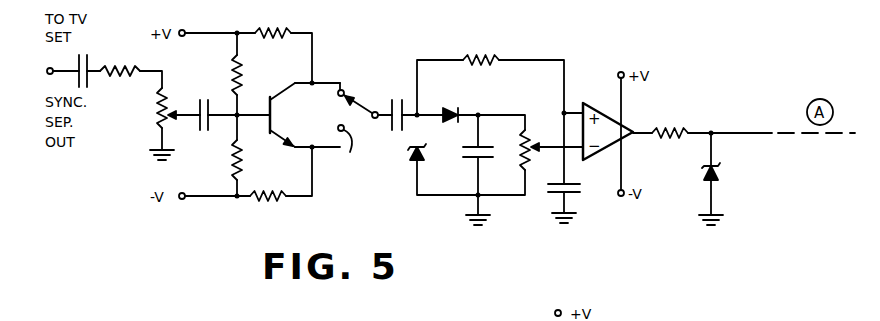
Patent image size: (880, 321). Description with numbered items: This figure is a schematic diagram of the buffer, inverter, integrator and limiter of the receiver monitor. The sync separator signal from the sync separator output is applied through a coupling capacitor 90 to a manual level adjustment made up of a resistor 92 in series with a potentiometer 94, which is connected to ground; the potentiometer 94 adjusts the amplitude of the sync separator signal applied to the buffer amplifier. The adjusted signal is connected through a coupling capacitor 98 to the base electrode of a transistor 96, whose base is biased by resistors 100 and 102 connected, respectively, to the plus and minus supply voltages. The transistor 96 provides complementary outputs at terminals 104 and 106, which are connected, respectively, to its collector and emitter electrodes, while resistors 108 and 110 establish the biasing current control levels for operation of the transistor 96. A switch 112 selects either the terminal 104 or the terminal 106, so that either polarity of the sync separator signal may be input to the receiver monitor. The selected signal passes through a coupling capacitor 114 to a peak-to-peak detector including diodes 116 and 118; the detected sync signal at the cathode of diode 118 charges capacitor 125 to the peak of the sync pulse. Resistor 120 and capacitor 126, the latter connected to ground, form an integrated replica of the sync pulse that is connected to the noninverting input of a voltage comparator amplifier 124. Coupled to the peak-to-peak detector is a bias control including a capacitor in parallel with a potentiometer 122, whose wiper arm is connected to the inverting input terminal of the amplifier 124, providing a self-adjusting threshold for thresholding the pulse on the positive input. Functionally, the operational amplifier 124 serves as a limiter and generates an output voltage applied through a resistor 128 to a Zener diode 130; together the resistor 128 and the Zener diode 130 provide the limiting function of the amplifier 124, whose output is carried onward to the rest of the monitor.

The coupling capacitor 90 is at (84, 52).
The resistor 92 is at (126, 78).
The potentiometer 94 is at (158, 90).
The transistor 96 is at (284, 96).
The coupling capacitor 98 is at (205, 133).
The resistor 100 is at (250, 62).
The resistor 102 is at (250, 160).
The terminal 104 is at (345, 88).
The terminal 106 is at (337, 150).
The resistor 108 is at (258, 22).
The resistor 110 is at (268, 200).
The switch 112 is at (363, 103).
The coupling capacitor 114 is at (398, 133).
The diode 116 is at (413, 160).
The diode 118 is at (449, 107).
The resistor 120 is at (497, 56).
The potentiometer 122 is at (528, 112).
The voltage comparator amplifier 124 is at (618, 135).
The capacitor 125 is at (462, 170).
The capacitor 126 is at (577, 190).
The resistor 128 is at (672, 127).
The Zener diode 130 is at (722, 166).